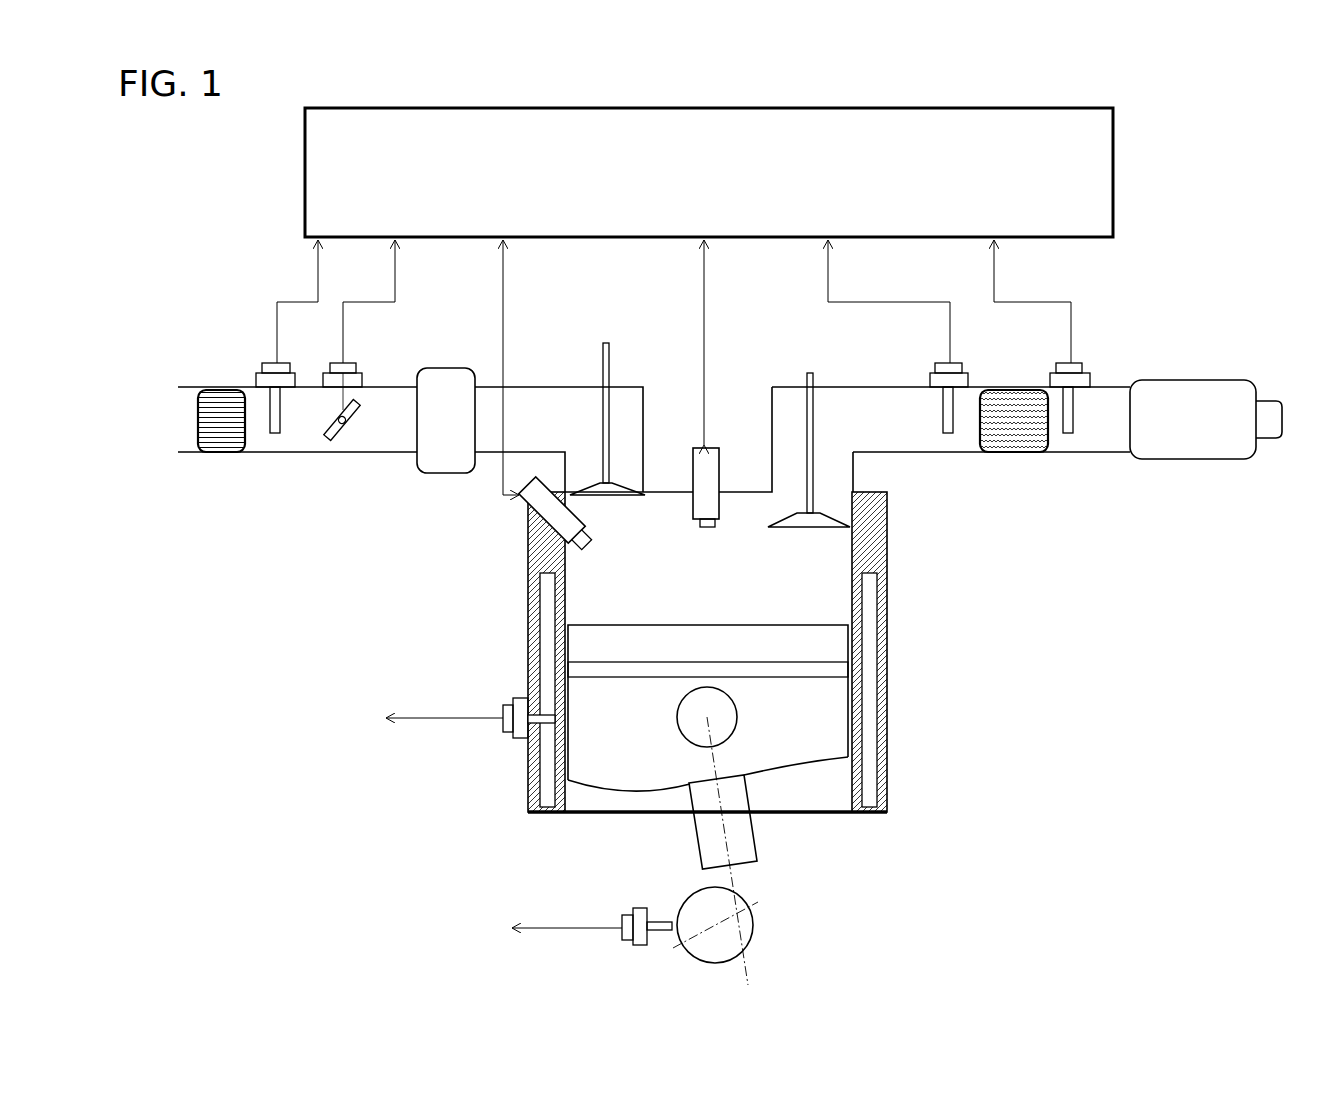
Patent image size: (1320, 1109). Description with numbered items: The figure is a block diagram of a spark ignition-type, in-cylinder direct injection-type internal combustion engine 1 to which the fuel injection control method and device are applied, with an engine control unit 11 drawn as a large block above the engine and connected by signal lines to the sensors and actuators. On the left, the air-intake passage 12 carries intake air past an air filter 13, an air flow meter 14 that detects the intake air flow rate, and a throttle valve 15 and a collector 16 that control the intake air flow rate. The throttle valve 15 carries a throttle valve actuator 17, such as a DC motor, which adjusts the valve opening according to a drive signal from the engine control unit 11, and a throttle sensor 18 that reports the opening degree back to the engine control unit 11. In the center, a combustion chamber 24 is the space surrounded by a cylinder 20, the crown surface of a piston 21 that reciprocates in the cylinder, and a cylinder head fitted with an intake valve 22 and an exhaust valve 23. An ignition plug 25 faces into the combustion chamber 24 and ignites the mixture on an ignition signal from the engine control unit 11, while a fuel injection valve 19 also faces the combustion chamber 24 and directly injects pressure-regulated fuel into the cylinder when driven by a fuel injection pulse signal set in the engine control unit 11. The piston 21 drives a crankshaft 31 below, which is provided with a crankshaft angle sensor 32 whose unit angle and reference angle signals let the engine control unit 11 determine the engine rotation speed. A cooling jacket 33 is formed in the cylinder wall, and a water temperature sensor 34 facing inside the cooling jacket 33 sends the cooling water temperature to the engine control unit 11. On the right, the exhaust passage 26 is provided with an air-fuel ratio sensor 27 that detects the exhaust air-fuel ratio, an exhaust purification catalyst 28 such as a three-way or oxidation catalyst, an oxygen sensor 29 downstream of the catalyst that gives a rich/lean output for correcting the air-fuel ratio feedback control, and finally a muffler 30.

The internal combustion engine 1 is at (1193, 190).
The engine control unit 11 is at (968, 142).
The air-intake passage 12 is at (298, 528).
The air filter 13 is at (223, 432).
The air flow meter 14 is at (278, 433).
The throttle valve 15 is at (335, 440).
The collector 16 is at (438, 443).
The throttle valve actuator 17 is at (333, 372).
The throttle sensor 18 is at (352, 370).
The fuel injection valve 19 is at (540, 515).
The cylinder 20 is at (885, 575).
The piston 21 is at (820, 728).
The intake valve 22 is at (603, 405).
The exhaust valve 23 is at (810, 530).
The combustion chamber 24 is at (720, 598).
The ignition plug 25 is at (708, 470).
The exhaust passage 26 is at (1062, 548).
The air-fuel ratio sensor 27 is at (960, 378).
The exhaust purification catalyst 28 is at (1015, 435).
The oxygen sensor 29 is at (1078, 370).
The muffler 30 is at (1180, 442).
The crankshaft 31 is at (755, 920).
The crankshaft angle sensor 32 is at (633, 940).
The cooling jacket 33 is at (543, 620).
The water temperature sensor 34 is at (505, 735).